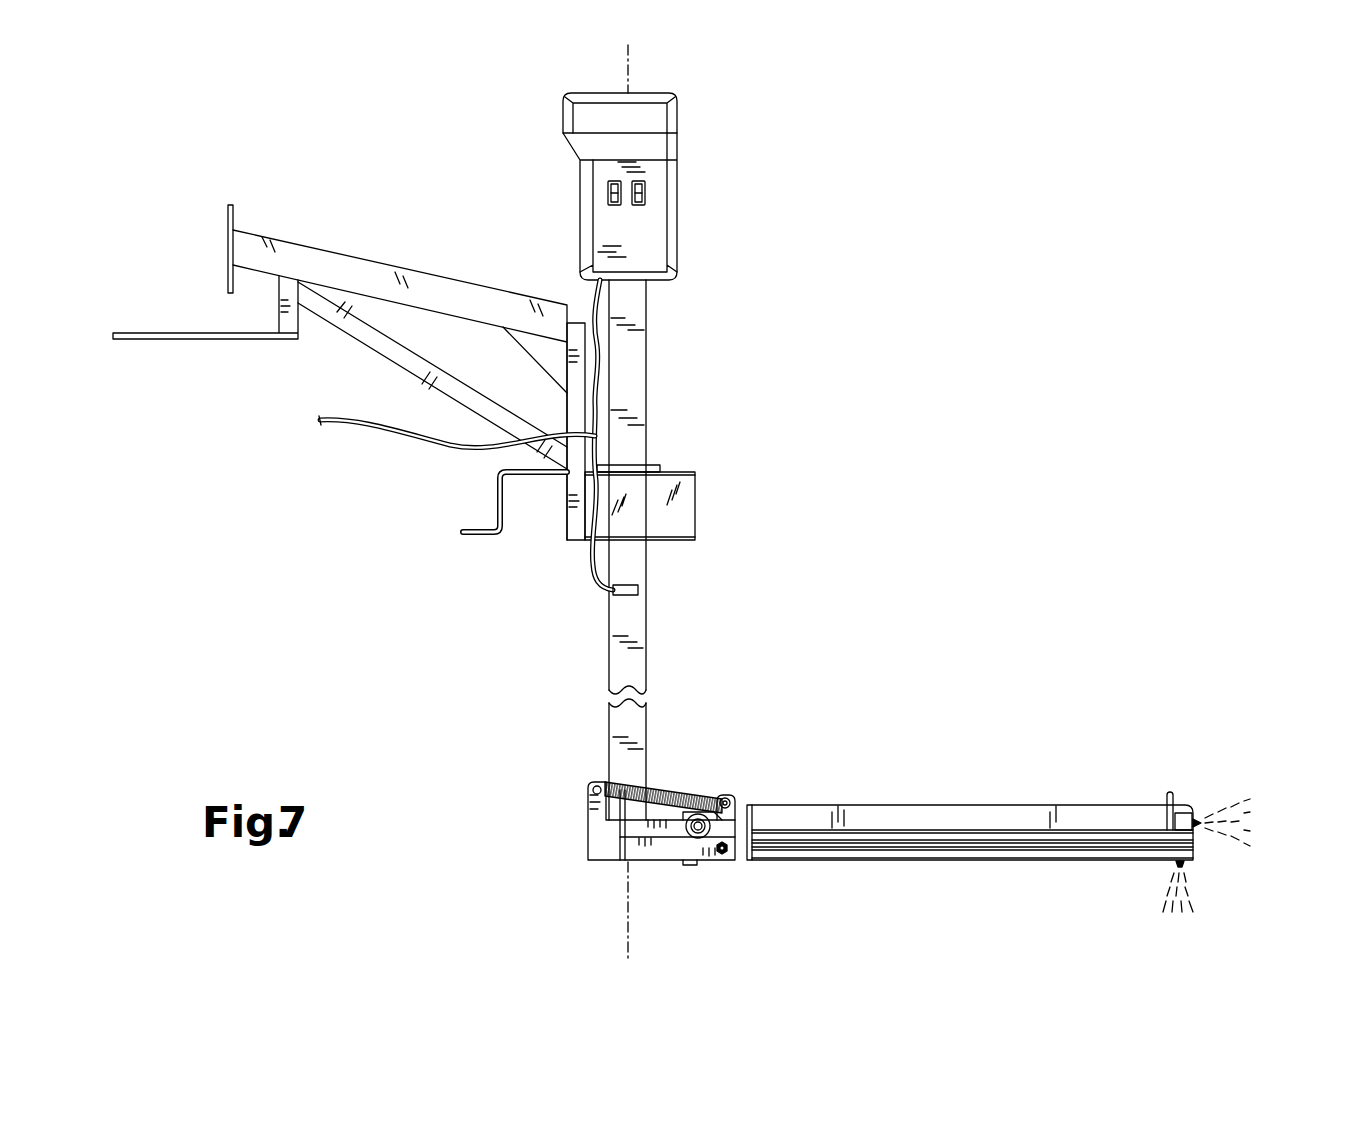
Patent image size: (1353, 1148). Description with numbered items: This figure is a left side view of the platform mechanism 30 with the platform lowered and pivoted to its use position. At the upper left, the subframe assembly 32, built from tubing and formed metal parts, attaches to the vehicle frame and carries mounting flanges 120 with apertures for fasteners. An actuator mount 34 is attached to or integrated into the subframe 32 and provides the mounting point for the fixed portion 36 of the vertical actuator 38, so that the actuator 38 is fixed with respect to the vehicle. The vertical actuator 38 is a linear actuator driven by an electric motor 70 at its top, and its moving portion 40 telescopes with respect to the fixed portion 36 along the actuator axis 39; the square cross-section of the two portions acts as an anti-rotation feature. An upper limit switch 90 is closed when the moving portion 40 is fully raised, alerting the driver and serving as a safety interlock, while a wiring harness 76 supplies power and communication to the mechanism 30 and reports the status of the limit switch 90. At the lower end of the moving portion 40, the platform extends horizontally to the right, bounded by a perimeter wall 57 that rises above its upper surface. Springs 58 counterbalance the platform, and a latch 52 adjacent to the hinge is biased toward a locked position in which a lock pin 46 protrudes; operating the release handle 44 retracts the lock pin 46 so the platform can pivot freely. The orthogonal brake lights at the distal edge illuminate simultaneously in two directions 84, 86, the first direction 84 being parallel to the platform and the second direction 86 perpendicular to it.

The platform mechanism 30 is at (1115, 202).
The subframe assembly 32 is at (410, 240).
The actuator mount 34 is at (687, 502).
The fixed portion 36 is at (641, 402).
The vertical actuator 38 is at (686, 195).
The actuator axis 39 is at (626, 931).
The moving portion 40 is at (620, 725).
The release handle 44 is at (620, 830).
The lock pin 46 is at (726, 851).
The latch 52 is at (665, 850).
The perimeter wall 57 is at (753, 820).
The springs 58 is at (693, 790).
The electric motor 70 is at (642, 117).
The wiring harness 76 is at (352, 428).
The first direction 84 is at (1240, 790).
The second direction 86 is at (1150, 898).
The upper limit switch 90 is at (630, 573).
The mounting flanges 120 is at (490, 528).